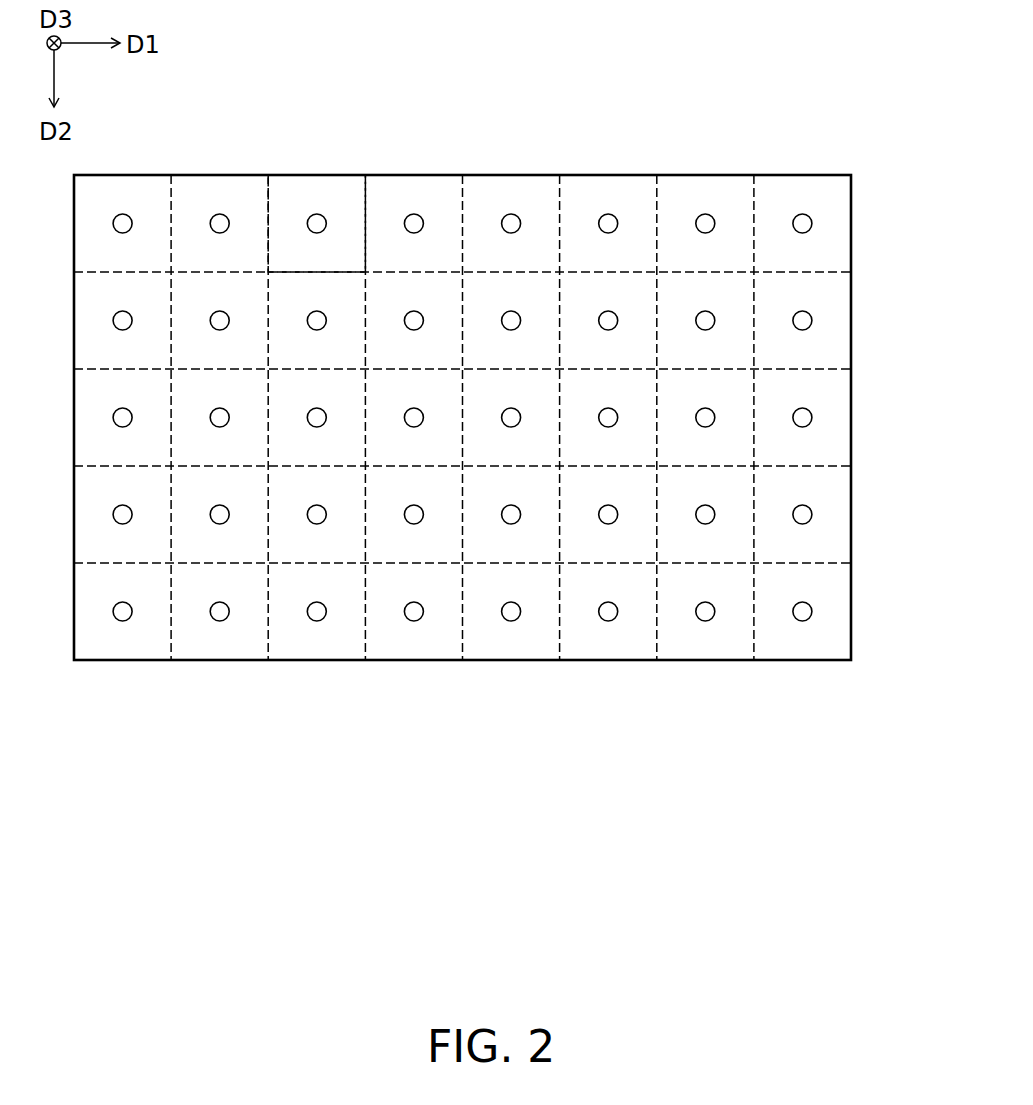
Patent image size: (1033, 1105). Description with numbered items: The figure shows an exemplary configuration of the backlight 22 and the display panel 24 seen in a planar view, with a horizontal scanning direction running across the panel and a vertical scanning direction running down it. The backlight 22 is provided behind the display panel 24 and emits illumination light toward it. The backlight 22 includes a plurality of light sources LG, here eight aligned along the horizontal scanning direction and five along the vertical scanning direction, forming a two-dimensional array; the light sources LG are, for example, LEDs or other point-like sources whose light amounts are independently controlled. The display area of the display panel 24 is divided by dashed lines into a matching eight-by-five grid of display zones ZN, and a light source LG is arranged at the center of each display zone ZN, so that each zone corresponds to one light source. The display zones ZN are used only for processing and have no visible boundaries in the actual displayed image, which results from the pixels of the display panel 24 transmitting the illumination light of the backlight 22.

The backlight 22 is at (514, 417).
The display panel 24 is at (851, 318).
The display zone ZN is at (298, 190).
The light source LG is at (325, 218).